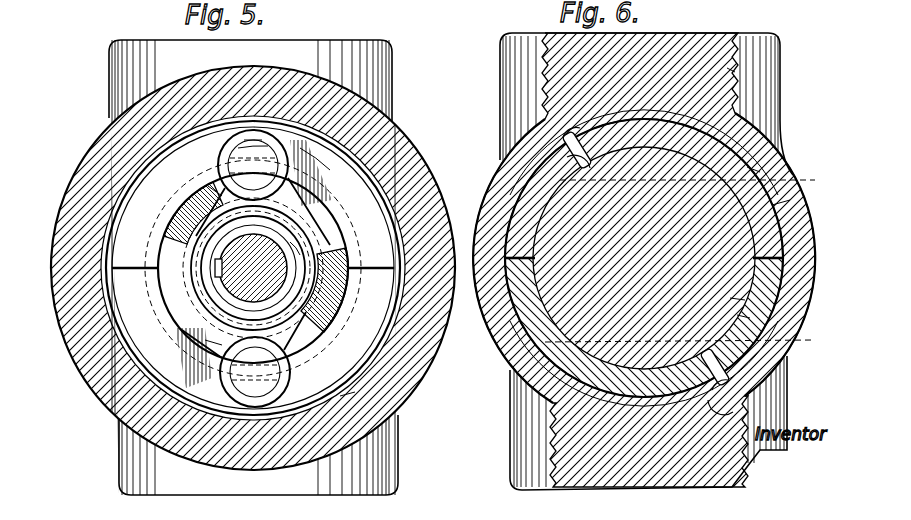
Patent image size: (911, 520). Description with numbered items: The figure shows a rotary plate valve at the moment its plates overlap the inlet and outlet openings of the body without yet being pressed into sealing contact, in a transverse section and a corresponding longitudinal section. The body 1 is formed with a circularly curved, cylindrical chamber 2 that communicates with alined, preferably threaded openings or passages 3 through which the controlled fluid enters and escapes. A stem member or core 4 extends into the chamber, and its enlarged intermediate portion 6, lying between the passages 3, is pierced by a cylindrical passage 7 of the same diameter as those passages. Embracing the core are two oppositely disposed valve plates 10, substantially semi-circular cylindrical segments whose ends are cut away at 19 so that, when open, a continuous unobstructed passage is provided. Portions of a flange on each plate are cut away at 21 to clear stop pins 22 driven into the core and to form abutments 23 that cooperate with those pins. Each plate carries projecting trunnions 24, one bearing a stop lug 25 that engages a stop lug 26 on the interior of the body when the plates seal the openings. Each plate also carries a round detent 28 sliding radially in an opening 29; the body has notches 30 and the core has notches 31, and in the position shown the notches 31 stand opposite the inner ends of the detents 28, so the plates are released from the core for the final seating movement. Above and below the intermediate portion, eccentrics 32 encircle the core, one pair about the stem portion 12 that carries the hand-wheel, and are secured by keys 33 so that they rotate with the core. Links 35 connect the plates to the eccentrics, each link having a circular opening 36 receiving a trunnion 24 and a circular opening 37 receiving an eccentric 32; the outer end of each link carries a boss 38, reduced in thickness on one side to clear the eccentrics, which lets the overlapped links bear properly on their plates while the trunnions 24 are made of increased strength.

In FIG. 5, the body 1 is at (120, 440).
In FIG. 6, the body 1 is at (520, 452).
In FIG. 5, the chamber 2 is at (330, 195).
In FIG. 6, the chamber 2 is at (505, 363).
In FIG. 6, the openings or passages 3 is at (727, 68).
In FIG. 6, the stem member or core 4 is at (700, 180).
In FIG. 6, the intermediate portion 6 is at (730, 298).
In FIG. 6, the passage 7 is at (747, 167).
In FIG. 5, the valve plates 10 is at (112, 185).
In FIG. 6, the valve plates 10 is at (772, 205).
In FIG. 5, the stem portion 12 is at (292, 260).
In FIG. 5, the openings or recesses 19 is at (300, 262).
In FIG. 6, the openings or recesses 19 is at (763, 328).
In FIG. 5, the cut away portions 21 is at (163, 238).
In FIG. 5, the stop pins 22 is at (303, 207).
In FIG. 5, the abutments 23 is at (213, 348).
In FIG. 5, the trunnions 24 is at (318, 128).
In FIG. 5, the stop lug 25 is at (238, 148).
In FIG. 5, the stop lug 26 is at (300, 148).
In FIG. 6, the detent 28 is at (562, 140).
In FIG. 6, the openings 29 is at (567, 157).
In FIG. 6, the recesses or notches 30 is at (563, 137).
In FIG. 6, the notches 31 is at (737, 315).
In FIG. 5, the eccentrics 32 is at (265, 240).
In FIG. 6, the eccentrics 32 is at (560, 180).
In FIG. 5, the keys 33 is at (220, 266).
In FIG. 5, the links 35 is at (212, 186).
In FIG. 5, the circular opening 36 is at (228, 162).
In FIG. 5, the circular opening 37 is at (290, 242).
In FIG. 5, the boss 38 is at (250, 137).